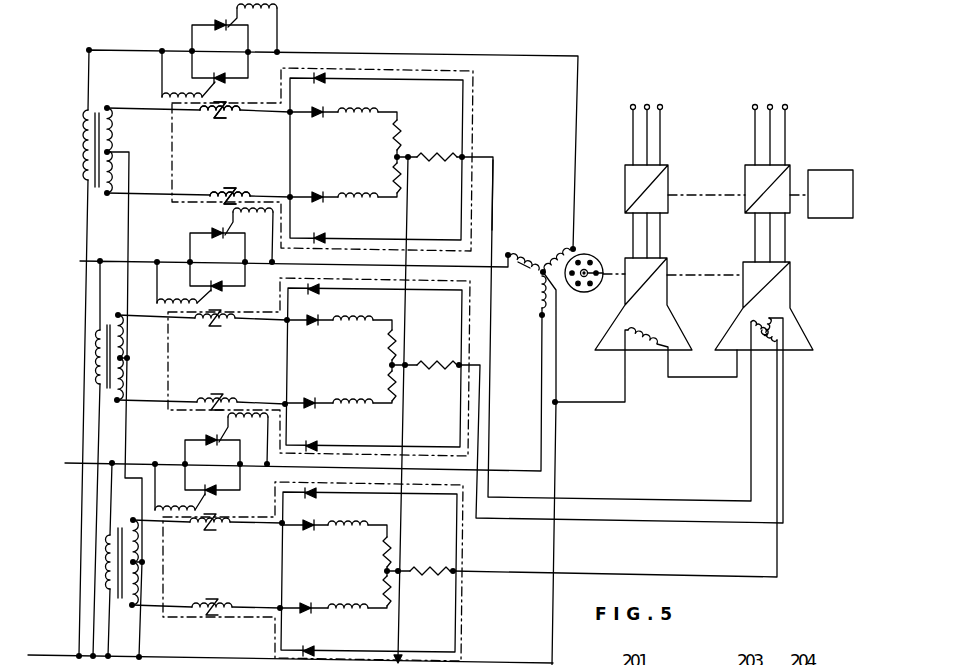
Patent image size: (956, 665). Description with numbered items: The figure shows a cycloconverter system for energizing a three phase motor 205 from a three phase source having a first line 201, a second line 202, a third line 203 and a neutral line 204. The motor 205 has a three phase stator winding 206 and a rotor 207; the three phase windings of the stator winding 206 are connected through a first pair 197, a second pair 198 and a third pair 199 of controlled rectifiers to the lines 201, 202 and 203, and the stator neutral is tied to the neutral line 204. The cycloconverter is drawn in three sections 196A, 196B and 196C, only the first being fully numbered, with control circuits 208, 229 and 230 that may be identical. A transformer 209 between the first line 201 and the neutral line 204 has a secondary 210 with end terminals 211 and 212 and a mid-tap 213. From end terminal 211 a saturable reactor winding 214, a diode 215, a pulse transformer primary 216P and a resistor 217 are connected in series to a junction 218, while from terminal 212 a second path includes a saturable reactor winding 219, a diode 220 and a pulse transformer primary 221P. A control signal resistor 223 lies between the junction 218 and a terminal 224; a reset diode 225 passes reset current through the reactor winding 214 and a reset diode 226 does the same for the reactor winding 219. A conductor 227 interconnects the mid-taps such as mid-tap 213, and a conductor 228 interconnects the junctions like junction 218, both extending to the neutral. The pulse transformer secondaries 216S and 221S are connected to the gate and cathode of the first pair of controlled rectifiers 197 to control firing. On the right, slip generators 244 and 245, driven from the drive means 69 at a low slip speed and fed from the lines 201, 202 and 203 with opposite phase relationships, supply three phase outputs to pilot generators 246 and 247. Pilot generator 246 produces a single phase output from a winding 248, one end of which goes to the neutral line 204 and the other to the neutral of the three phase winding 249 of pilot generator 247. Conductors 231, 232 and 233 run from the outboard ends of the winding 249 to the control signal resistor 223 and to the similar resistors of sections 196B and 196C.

The drive means 69 is at (843, 161).
The cycloconverter section 196A is at (473, 115).
The cycloconverter section 196B is at (468, 352).
The cycloconverter section 196C is at (463, 559).
The first pair of controlled rectifiers 197 is at (192, 42).
The second pair of controlled rectifiers 198 is at (190, 246).
The third pair of controlled rectifiers 199 is at (185, 447).
The first line 201 is at (80, 50).
The second line 202 is at (80, 262).
The third line 203 is at (65, 463).
The neutral line 204 is at (65, 655).
The three phase motor 205 is at (551, 235).
The three phase stator winding 206 is at (522, 268).
The rotor 207 is at (592, 255).
The control circuit 208 is at (356, 143).
The transformer 209 is at (84, 164).
The secondary 210 is at (110, 118).
The end terminal 211 is at (88, 108).
The end terminal 212 is at (84, 196).
The mid-tap 213 is at (110, 152).
The saturable reactor winding 214 is at (247, 116).
The diode 215 is at (322, 110).
The pulse transformer primary 216P is at (372, 111).
The pulse transformer secondary 216S is at (281, 10).
The resistor 217 is at (400, 138).
The junction 218 is at (405, 156).
The saturable reactor winding 219 is at (252, 195).
The diode 220 is at (322, 196).
The pulse transformer primary 221P is at (346, 200).
The pulse transformer secondary 221S is at (162, 98).
The control signal resistor 223 is at (404, 168).
The terminal 224 is at (466, 157).
The reset diode 225 is at (324, 76).
The reset diode 226 is at (320, 236).
The conductor 227 is at (128, 231).
The conductor 228 is at (410, 233).
The control circuit 229 is at (323, 355).
The control circuit 230 is at (305, 557).
The conductor 231 is at (494, 199).
The conductor 232 is at (478, 403).
The conductor 233 is at (472, 574).
The slip generator 244 is at (667, 170).
The slip generator 245 is at (745, 183).
The pilot generator 246 is at (668, 268).
The pilot generator 247 is at (790, 271).
The winding 248 is at (662, 343).
The three phase winding 249 is at (783, 340).